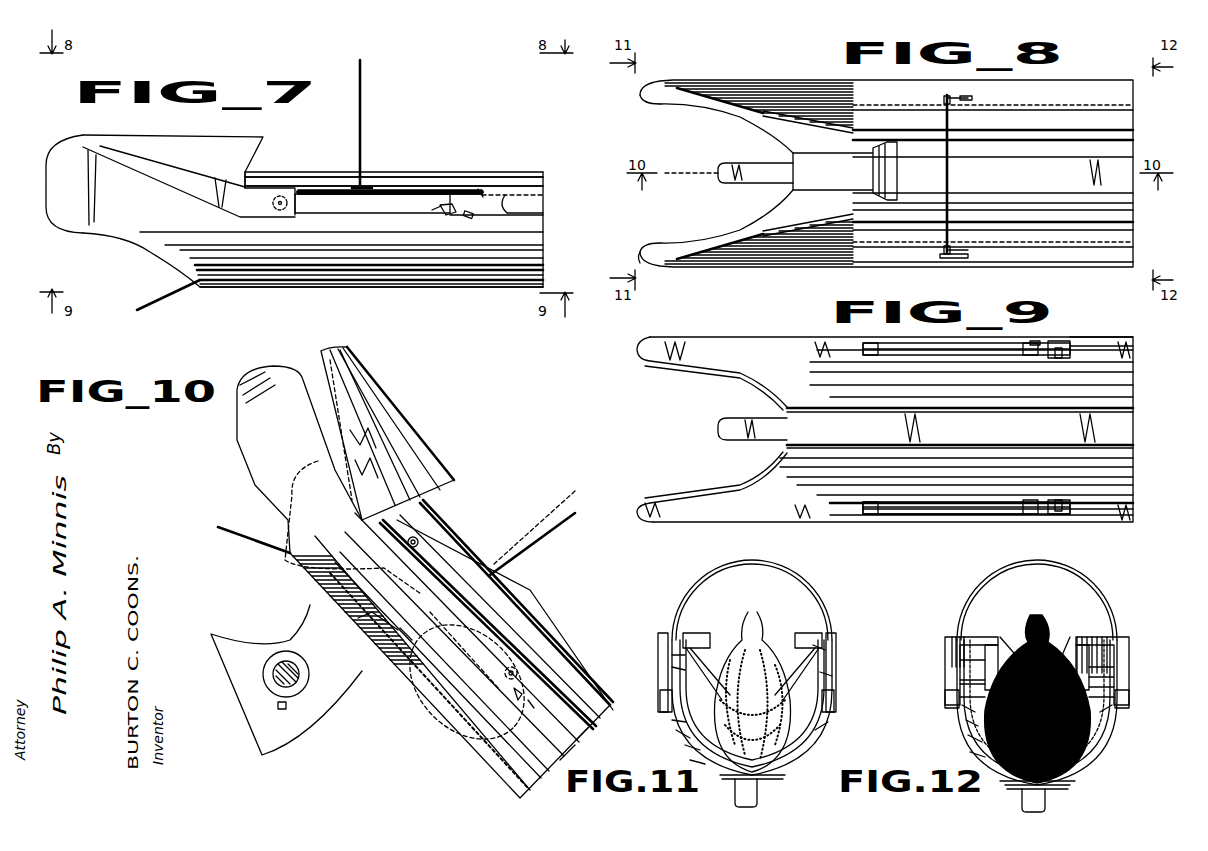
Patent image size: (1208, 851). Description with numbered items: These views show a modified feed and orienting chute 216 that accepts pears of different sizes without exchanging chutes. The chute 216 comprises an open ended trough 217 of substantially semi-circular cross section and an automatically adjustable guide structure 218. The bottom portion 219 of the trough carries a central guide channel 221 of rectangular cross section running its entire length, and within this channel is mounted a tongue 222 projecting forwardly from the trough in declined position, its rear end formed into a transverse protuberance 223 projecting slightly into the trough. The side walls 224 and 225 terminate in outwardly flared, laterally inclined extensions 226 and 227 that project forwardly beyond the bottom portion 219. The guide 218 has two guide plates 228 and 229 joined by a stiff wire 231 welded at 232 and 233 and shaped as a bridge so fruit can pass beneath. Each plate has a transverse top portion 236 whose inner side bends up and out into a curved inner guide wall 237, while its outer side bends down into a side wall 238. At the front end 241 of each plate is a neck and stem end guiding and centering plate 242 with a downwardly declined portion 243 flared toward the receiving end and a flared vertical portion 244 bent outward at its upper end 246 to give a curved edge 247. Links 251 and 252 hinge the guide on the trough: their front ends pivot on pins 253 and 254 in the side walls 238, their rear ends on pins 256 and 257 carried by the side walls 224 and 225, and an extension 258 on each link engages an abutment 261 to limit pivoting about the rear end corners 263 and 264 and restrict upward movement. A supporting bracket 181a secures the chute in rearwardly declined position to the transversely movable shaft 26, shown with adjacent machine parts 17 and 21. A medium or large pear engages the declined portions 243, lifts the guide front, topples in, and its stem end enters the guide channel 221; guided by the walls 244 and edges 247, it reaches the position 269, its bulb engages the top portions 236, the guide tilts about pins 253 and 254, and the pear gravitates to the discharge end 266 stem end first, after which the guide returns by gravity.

In FIG. 10, the frame 17 is at (270, 715).
In FIG. 10, the clamp 21 is at (307, 704).
In FIG. 10, the transversely movable shaft 26 is at (321, 686).
In FIG. 10, the supporting bracket 181a is at (325, 630).
In FIG. 7, the chute 216 is at (267, 283).
In FIG. 8, the chute 216 is at (1110, 73).
In FIG. 9, the chute 216 is at (780, 327).
In FIG. 10, the chute 216 is at (421, 693).
In FIG. 11, the chute 216 is at (800, 773).
In FIG. 12, the chute 216 is at (1100, 777).
In FIG. 7, the trough 217 is at (364, 234).
In FIG. 8, the trough 217 is at (1123, 148).
In FIG. 9, the trough 217 is at (1120, 393).
In FIG. 10, the trough 217 is at (460, 670).
In FIG. 11, the trough 217 is at (817, 753).
In FIG. 12, the trough 217 is at (1097, 767).
In FIG. 7, the guide structure 218 is at (277, 167).
In FIG. 8, the guide structure 218 is at (1090, 260).
In FIG. 9, the guide structure 218 is at (858, 328).
In FIG. 10, the guide structure 218 is at (450, 483).
In FIG. 11, the guide structure 218 is at (667, 638).
In FIG. 12, the guide structure 218 is at (953, 670).
In FIG. 7, the bottom portion 219 is at (437, 273).
In FIG. 8, the bottom portion 219 is at (999, 209).
In FIG. 9, the bottom portion 219 is at (1029, 403).
In FIG. 10, the bottom portion 219 is at (479, 722).
In FIG. 11, the bottom portion 219 is at (690, 747).
In FIG. 12, the bottom portion 219 is at (970, 752).
In FIG. 7, the guide channel 221 is at (507, 287).
In FIG. 8, the guide channel 221 is at (1039, 183).
In FIG. 9, the guide channel 221 is at (966, 438).
In FIG. 10, the guide channel 221 is at (494, 770).
In FIG. 11, the guide channel 221 is at (730, 787).
In FIG. 12, the guide channel 221 is at (1057, 792).
In FIG. 7, the tongue 222 is at (163, 303).
In FIG. 8, the tongue 222 is at (753, 167).
In FIG. 9, the tongue 222 is at (747, 427).
In FIG. 10, the tongue 222 is at (251, 539).
In FIG. 11, the tongue 222 is at (757, 795).
In FIG. 12, the tongue 222 is at (1033, 797).
In FIG. 8, the protuberance 223 is at (893, 163).
In FIG. 10, the protuberance 223 is at (358, 618).
In FIG. 11, the protuberance 223 is at (697, 762).
In FIG. 12, the protuberance 223 is at (1065, 787).
In FIG. 9, the side wall 224 is at (1120, 463).
In FIG. 10, the side wall 224 is at (449, 640).
In FIG. 11, the side wall 224 is at (677, 722).
In FIG. 12, the side wall 224 is at (1100, 747).
In FIG. 7, the side wall 225 is at (533, 232).
In FIG. 9, the side wall 225 is at (1123, 375).
In FIG. 11, the side wall 225 is at (817, 733).
In FIG. 12, the side wall 225 is at (970, 723).
In FIG. 7, the extension 226 is at (124, 201).
In FIG. 8, the extension 226 is at (703, 243).
In FIG. 9, the extension 226 is at (726, 359).
In FIG. 11, the extension 226 is at (830, 678).
In FIG. 8, the extension 227 is at (693, 107).
In FIG. 9, the extension 227 is at (716, 513).
In FIG. 10, the extension 227 is at (283, 434).
In FIG. 11, the extension 227 is at (680, 667).
In FIG. 8, the guide plate 228 is at (993, 96).
In FIG. 9, the guide plate 228 is at (973, 513).
In FIG. 10, the guide plate 228 is at (501, 586).
In FIG. 11, the guide plate 228 is at (680, 655).
In FIG. 12, the guide plate 228 is at (1130, 665).
In FIG. 7, the guide plate 229 is at (445, 185).
In FIG. 8, the guide plate 229 is at (1059, 258).
In FIG. 9, the guide plate 229 is at (1103, 347).
In FIG. 11, the guide plate 229 is at (813, 647).
In FIG. 12, the guide plate 229 is at (968, 680).
In FIG. 7, the stiff wire 231 is at (362, 117).
In FIG. 8, the stiff wire 231 is at (962, 165).
In FIG. 10, the stiff wire 231 is at (549, 535).
In FIG. 11, the stiff wire 231 is at (793, 580).
In FIG. 12, the stiff wire 231 is at (1108, 575).
In FIG. 8, the weld 232 is at (960, 98).
In FIG. 12, the weld 232 is at (1120, 697).
In FIG. 7, the weld 233 is at (368, 188).
In FIG. 8, the weld 233 is at (952, 252).
In FIG. 12, the weld 233 is at (953, 697).
In FIG. 7, the top portion 236 is at (417, 187).
In FIG. 9, the top portion 236 is at (1027, 333).
In FIG. 10, the top portion 236 is at (538, 630).
In FIG. 12, the top portion 236 is at (957, 683).
In FIG. 7, the inner guide wall 237 is at (505, 183).
In FIG. 8, the inner guide wall 237 is at (1127, 133).
In FIG. 10, the inner guide wall 237 is at (531, 612).
In FIG. 12, the inner guide wall 237 is at (960, 660).
In FIG. 7, the side wall 238 is at (527, 207).
In FIG. 8, the side wall 238 is at (943, 80).
In FIG. 9, the side wall 238 is at (1053, 353).
In FIG. 10, the side wall 238 is at (412, 525).
In FIG. 11, the side wall 238 is at (665, 702).
In FIG. 12, the side wall 238 is at (947, 703).
In FIG. 7, the front end 241 is at (217, 193).
In FIG. 8, the front end 241 is at (827, 68).
In FIG. 12, the front end 241 is at (953, 653).
In FIG. 7, the guiding and centering plate 242 is at (217, 150).
In FIG. 8, the guiding and centering plate 242 is at (760, 117).
In FIG. 10, the guiding and centering plate 242 is at (406, 419).
In FIG. 11, the guiding and centering plate 242 is at (693, 602).
In FIG. 12, the guiding and centering plate 242 is at (965, 632).
In FIG. 10, the downwardly declined portion 243 is at (369, 487).
In FIG. 11, the downwardly declined portion 243 is at (675, 735).
In FIG. 12, the downwardly declined portion 243 is at (967, 710).
In FIG. 7, the vertical portion 244 is at (245, 160).
In FIG. 8, the vertical portion 244 is at (783, 123).
In FIG. 10, the vertical portion 244 is at (426, 458).
In FIG. 11, the vertical portion 244 is at (767, 627).
In FIG. 12, the vertical portion 244 is at (1048, 630).
In FIG. 8, the upper end 246 is at (697, 243).
In FIG. 10, the upper end 246 is at (387, 388).
In FIG. 11, the upper end 246 is at (682, 625).
In FIG. 10, the curved edge 247 is at (421, 447).
In FIG. 11, the curved edge 247 is at (713, 637).
In FIG. 12, the curved edge 247 is at (1017, 637).
In FIG. 9, the link 251 is at (992, 517).
In FIG. 7, the link 252 is at (359, 211).
In FIG. 9, the link 252 is at (978, 330).
In FIG. 10, the link 252 is at (439, 573).
In FIG. 9, the pivot pin 253 is at (873, 353).
In FIG. 10, the pivot pin 254 is at (406, 542).
In FIG. 9, the pivot pin 256 is at (1028, 513).
In FIG. 7, the pivot pin 257 is at (448, 208).
In FIG. 9, the pivot pin 257 is at (1035, 342).
In FIG. 10, the pivot pin 257 is at (505, 673).
In FIG. 7, the extension 258 is at (470, 193).
In FIG. 9, the extension 258 is at (1053, 350).
In FIG. 10, the extension 258 is at (531, 710).
In FIG. 7, the abutment 261 is at (473, 217).
In FIG. 9, the abutment 261 is at (1057, 353).
In FIG. 10, the abutment 261 is at (516, 691).
In FIG. 9, the rear end corner 263 is at (1130, 507).
In FIG. 10, the rear end corner 263 is at (582, 741).
In FIG. 7, the rear end corner 264 is at (550, 190).
In FIG. 9, the rear end corner 264 is at (1130, 358).
In FIG. 7, the discharge end 266 is at (543, 253).
In FIG. 8, the discharge end 266 is at (1130, 178).
In FIG. 9, the discharge end 266 is at (1130, 423).
In FIG. 10, the discharge end 266 is at (575, 739).
In FIG. 12, the discharge end 266 is at (970, 737).
In FIG. 10, the oriented pear position 269 is at (410, 634).